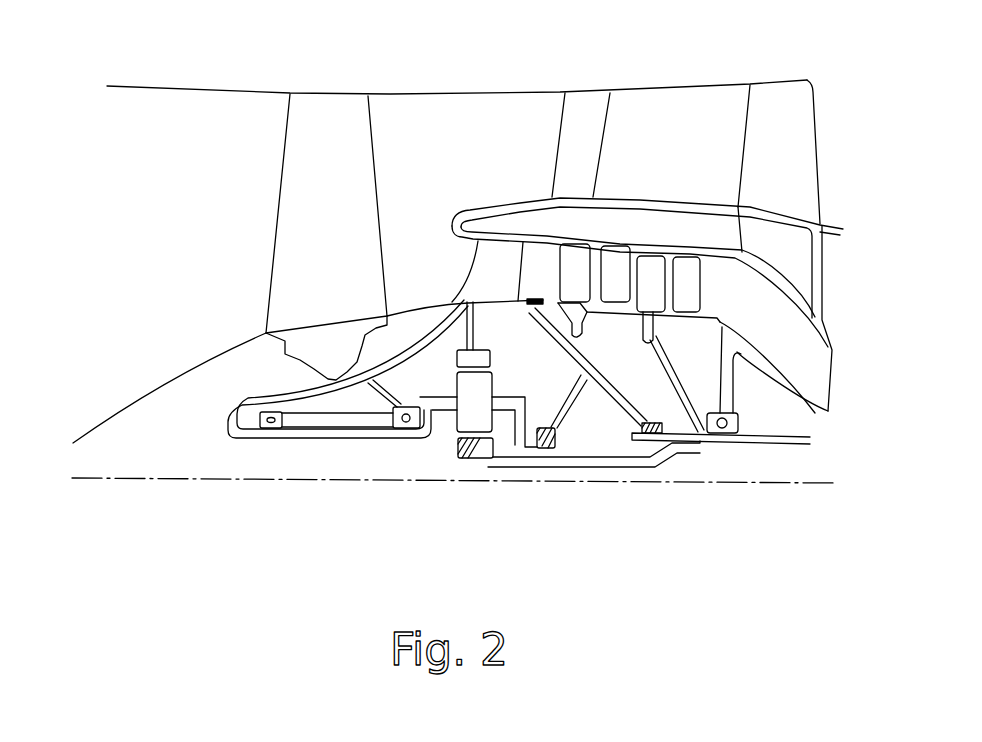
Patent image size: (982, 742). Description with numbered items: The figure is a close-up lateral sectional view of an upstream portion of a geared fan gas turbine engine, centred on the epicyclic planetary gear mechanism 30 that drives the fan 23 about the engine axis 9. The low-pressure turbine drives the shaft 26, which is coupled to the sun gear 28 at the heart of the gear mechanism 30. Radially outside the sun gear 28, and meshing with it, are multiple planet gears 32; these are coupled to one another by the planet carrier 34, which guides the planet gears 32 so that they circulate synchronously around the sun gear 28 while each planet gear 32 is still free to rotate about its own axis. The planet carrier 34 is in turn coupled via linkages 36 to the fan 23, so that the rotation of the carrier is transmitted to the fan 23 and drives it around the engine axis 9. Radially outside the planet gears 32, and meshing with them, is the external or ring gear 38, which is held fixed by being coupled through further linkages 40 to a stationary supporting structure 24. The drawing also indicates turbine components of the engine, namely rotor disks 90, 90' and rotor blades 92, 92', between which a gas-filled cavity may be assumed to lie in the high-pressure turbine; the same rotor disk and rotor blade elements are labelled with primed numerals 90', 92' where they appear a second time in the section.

The engine axis 9 is at (257, 481).
The fan 23 is at (292, 218).
The stationary supporting structure 24 is at (477, 267).
The shaft 26 is at (617, 467).
The sun gear 28 is at (475, 450).
The epicyclic planetary gear mechanism 30 is at (426, 460).
The planet gears 32 is at (450, 438).
The planet carrier 34 is at (517, 450).
The linkages 36 is at (430, 450).
The ring gear 38 is at (457, 358).
The linkages 40 is at (477, 338).
The rotor disks 90 is at (680, 372).
The slot tab 90' is at (588, 367).
The rotor blades 92 is at (675, 228).
The slot 92' is at (604, 218).